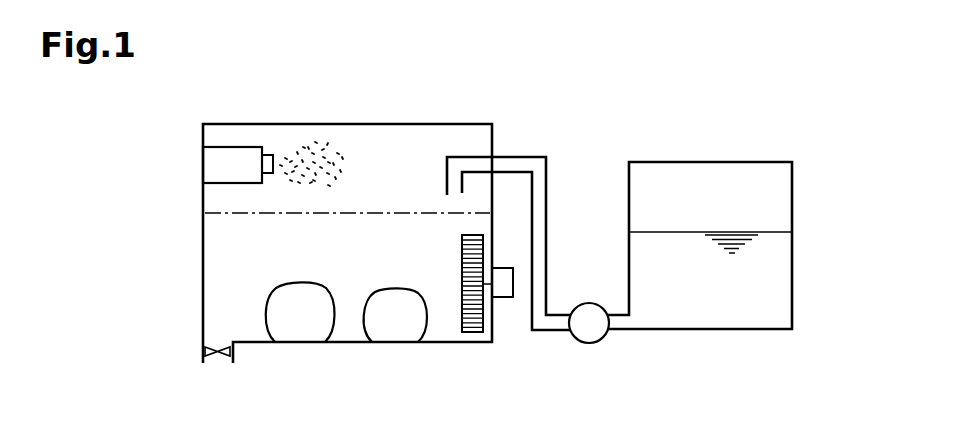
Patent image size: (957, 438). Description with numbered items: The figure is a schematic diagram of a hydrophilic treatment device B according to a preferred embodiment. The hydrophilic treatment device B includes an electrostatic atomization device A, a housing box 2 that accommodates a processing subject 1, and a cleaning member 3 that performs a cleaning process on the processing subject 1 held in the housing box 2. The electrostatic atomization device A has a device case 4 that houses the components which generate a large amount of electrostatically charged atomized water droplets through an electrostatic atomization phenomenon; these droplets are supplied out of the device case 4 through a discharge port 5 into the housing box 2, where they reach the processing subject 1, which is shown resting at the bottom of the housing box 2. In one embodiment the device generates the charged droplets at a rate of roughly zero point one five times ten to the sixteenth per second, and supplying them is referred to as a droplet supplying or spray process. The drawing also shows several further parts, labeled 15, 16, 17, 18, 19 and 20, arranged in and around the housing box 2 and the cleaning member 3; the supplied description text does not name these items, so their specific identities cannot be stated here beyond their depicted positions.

The processing subject 1 is at (305, 343).
The housing box 2 is at (418, 124).
The cleaning member 3 is at (687, 160).
The device case 4 is at (230, 183).
The discharge port 5 is at (275, 160).
The treated object 15 is at (293, 322).
The water 16 is at (793, 188).
The pipe 17 is at (548, 193).
The pump 18 is at (584, 345).
The heater 19 is at (473, 332).
The drain valve 20 is at (220, 343).
The electrostatic atomization device A is at (231, 146).
The hydrophilic treatment device B is at (336, 124).